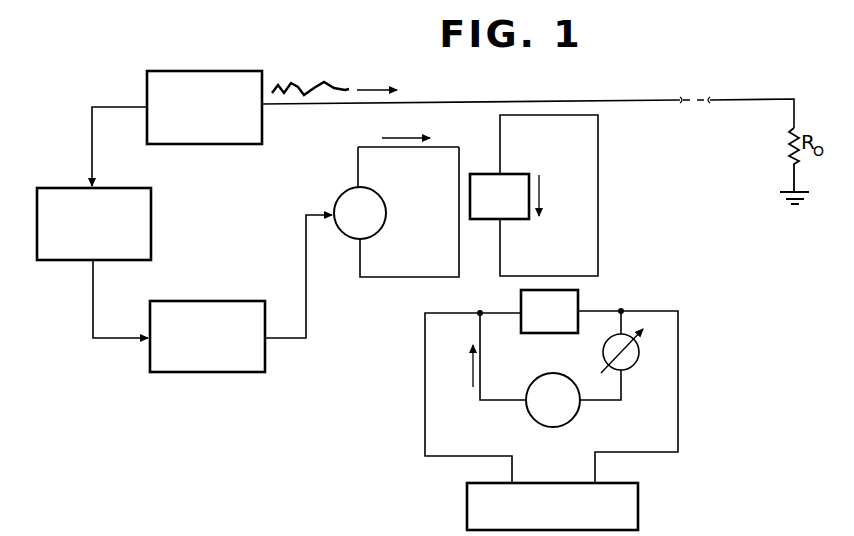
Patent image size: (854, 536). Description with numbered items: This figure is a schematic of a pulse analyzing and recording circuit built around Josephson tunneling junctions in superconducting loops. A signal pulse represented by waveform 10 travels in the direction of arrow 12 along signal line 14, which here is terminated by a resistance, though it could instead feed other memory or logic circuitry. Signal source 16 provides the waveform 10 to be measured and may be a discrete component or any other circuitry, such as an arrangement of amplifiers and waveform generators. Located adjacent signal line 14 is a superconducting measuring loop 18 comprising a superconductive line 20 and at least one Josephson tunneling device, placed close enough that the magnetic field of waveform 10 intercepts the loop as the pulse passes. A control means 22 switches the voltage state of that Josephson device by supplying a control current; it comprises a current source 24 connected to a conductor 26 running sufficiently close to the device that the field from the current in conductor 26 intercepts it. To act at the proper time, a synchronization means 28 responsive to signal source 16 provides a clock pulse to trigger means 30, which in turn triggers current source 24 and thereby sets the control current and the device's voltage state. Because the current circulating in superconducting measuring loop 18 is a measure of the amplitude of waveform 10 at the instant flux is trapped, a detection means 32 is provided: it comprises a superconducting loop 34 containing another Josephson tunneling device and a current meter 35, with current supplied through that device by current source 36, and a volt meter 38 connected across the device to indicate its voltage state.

The waveform 10 is at (301, 86).
The arrow 12 is at (370, 90).
The signal line 14 is at (637, 100).
The signal source 16 is at (182, 71).
The superconducting measuring loop 18 is at (566, 195).
The superconductive line 20 is at (600, 165).
The control means 22 is at (396, 231).
The current source 24 is at (387, 214).
The conductor 26 is at (416, 149).
The synchronization means 28 is at (60, 188).
The trigger means 30 is at (208, 301).
The detection means 32 is at (570, 400).
The superconducting loop 34 is at (632, 389).
The current meter 35 is at (635, 364).
The current source 36 is at (553, 373).
The volt meter 38 is at (640, 500).